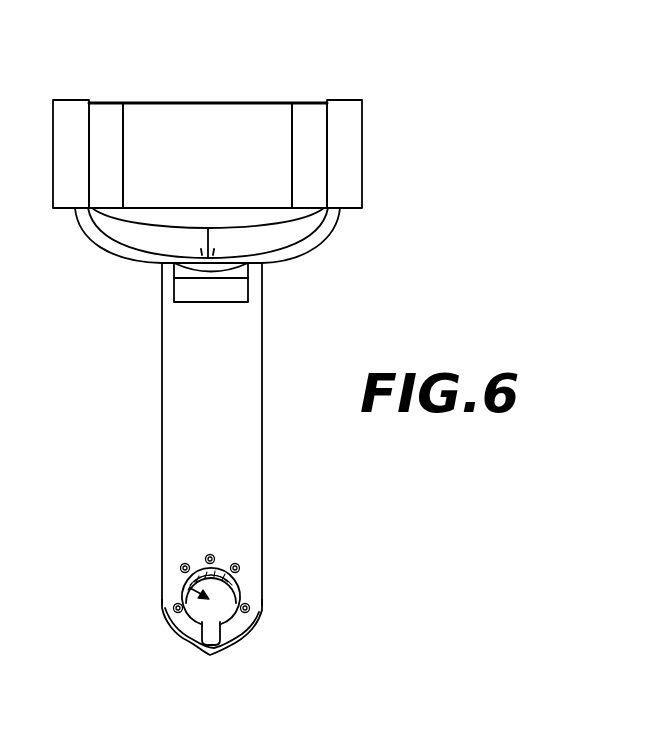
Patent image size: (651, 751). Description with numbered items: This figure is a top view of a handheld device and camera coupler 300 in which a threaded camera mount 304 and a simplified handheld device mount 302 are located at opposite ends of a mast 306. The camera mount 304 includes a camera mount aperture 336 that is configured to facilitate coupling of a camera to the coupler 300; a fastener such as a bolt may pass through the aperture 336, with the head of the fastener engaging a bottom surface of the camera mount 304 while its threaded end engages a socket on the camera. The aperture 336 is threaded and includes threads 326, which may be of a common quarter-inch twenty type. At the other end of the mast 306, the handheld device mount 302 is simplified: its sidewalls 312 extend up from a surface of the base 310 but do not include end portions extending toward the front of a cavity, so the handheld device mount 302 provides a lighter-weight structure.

The handheld device and camera coupler 300 is at (497, 188).
The handheld device mount 302 is at (92, 84).
The camera mount 304 is at (287, 590).
The mast 306 is at (262, 434).
The base 310 is at (230, 148).
The sidewalls 312 is at (371, 141).
The threads 326 is at (226, 582).
The camera mount aperture 336 is at (182, 583).